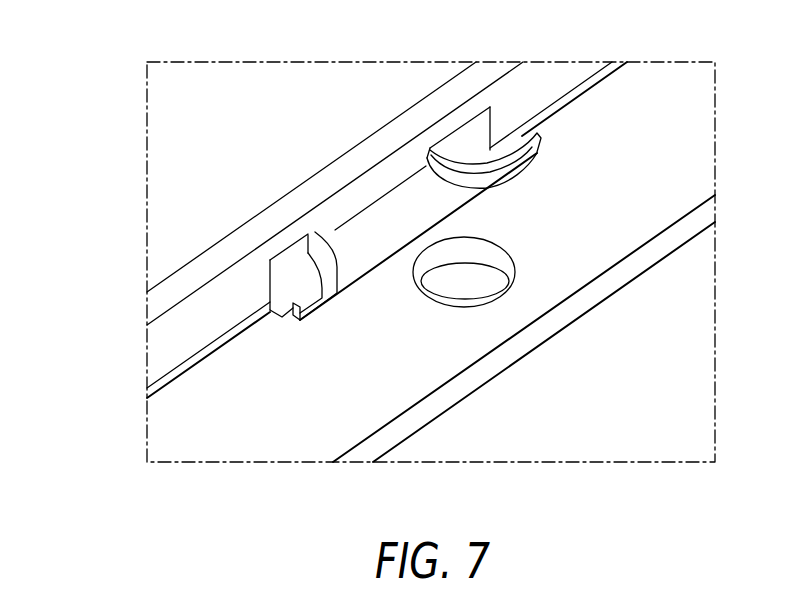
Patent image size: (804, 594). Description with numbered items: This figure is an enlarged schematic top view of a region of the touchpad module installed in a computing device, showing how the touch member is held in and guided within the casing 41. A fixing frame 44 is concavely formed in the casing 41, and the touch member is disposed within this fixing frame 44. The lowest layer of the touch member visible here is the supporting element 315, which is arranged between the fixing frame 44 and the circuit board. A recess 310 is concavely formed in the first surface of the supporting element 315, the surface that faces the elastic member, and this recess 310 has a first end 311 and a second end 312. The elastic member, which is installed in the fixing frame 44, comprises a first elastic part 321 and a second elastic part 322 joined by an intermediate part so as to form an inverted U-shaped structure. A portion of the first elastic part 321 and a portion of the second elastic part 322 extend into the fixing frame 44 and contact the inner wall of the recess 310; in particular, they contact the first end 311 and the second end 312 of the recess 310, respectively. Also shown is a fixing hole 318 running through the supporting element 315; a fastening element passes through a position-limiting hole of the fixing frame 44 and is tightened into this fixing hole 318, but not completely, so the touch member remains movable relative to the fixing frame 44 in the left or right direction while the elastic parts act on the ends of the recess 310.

The casing 41 is at (163, 217).
The fixing frame 44 is at (563, 437).
The supporting element 315 is at (265, 440).
The fixing hole 318 is at (507, 238).
The recess 310 is at (332, 230).
The first end 311 is at (545, 129).
The second end 312 is at (271, 322).
The first elastic part 321 is at (450, 176).
The second elastic part 322 is at (327, 247).